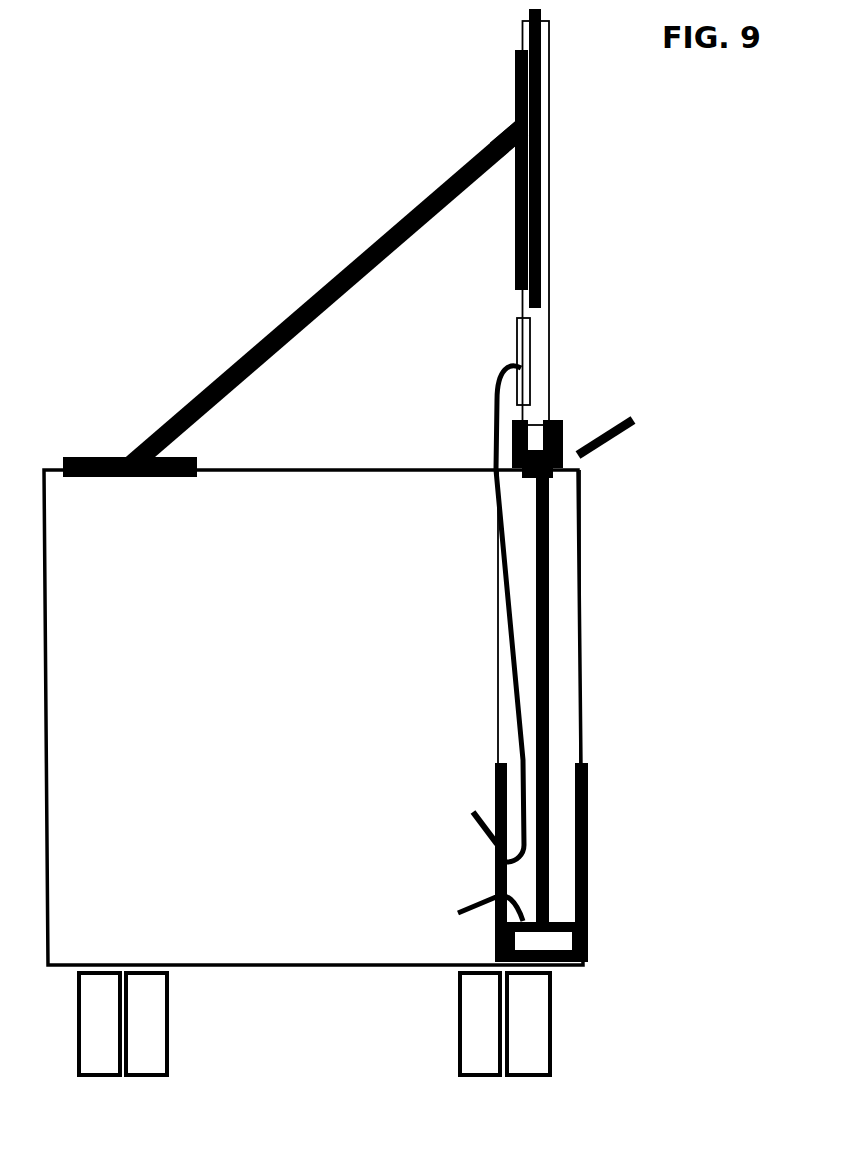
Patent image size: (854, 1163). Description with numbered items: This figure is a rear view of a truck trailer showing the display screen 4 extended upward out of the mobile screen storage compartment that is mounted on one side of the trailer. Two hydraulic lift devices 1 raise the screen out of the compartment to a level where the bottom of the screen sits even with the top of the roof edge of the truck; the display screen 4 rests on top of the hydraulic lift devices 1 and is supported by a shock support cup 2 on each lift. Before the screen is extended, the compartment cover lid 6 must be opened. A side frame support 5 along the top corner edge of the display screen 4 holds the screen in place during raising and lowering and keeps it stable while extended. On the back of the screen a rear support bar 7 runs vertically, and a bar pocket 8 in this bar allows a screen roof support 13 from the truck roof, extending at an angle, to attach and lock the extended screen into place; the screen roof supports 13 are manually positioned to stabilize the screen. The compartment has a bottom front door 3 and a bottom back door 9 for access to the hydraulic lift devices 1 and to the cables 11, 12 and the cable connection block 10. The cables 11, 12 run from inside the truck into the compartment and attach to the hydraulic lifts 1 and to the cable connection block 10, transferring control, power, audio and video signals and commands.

The hydraulic lift device 1 is at (562, 940).
The shock support cup 2 is at (577, 451).
The bottom front door 3 is at (603, 818).
The display screen 4 is at (566, 341).
The side frame support 5 is at (557, 207).
The compartment cover lid 6 is at (650, 420).
The rear support bar 7 is at (502, 75).
The bar pocket 8 is at (498, 120).
The bottom back door 9 is at (481, 790).
The cable connection block 10 is at (502, 351).
The cable 11 is at (481, 402).
The cable 12 is at (459, 902).
The screen roof support 13 is at (244, 334).